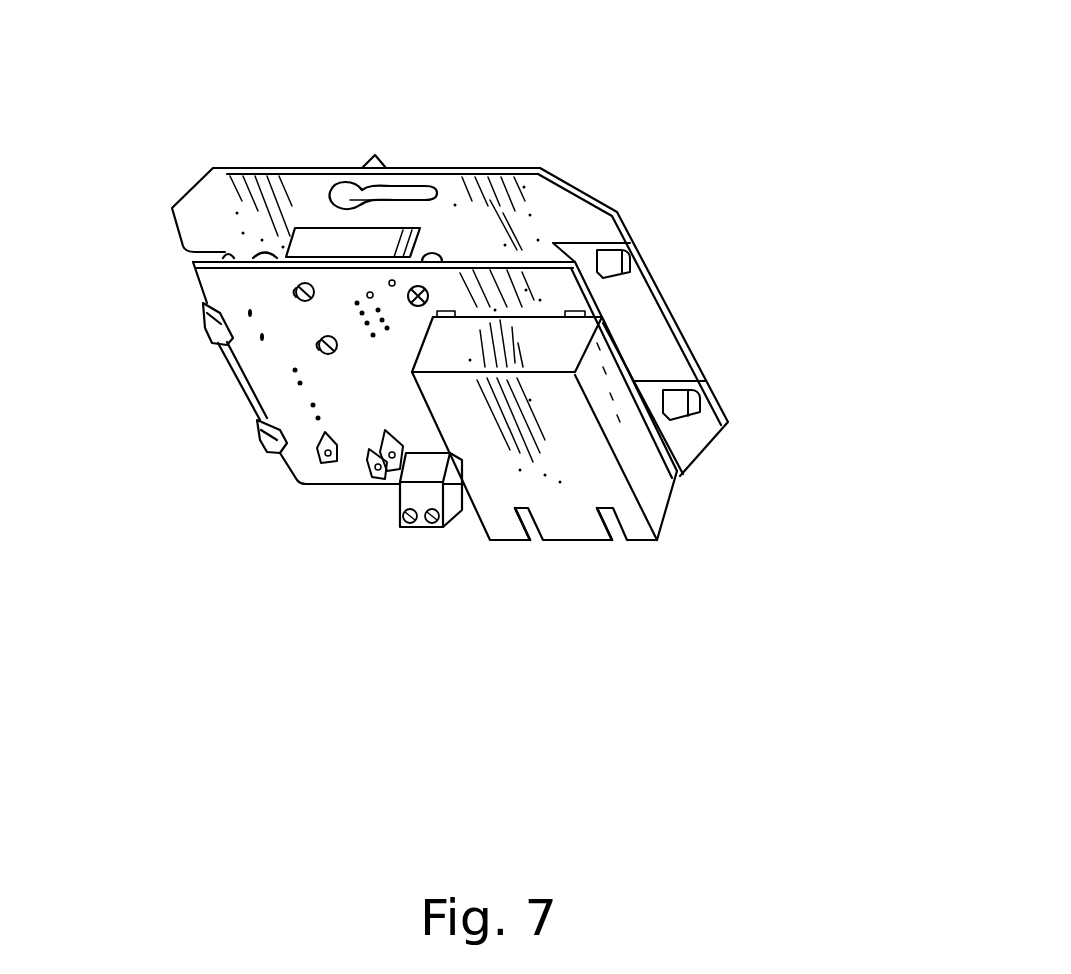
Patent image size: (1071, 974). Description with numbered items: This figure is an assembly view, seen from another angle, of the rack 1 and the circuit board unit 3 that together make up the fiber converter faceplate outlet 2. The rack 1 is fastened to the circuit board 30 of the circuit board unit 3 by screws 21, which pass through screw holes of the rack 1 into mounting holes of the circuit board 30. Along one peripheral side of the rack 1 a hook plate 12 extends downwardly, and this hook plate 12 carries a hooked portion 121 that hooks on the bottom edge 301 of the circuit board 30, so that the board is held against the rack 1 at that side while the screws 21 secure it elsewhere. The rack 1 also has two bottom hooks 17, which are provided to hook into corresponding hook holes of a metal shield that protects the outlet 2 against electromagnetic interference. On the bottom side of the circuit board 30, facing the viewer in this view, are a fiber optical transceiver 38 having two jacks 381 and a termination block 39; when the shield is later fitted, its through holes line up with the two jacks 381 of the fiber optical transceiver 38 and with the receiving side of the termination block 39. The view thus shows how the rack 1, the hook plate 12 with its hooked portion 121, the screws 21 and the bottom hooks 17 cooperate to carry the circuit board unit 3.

The rack 1 is at (634, 185).
The fiber converter faceplate outlet 2 is at (601, 150).
The circuit board unit 3 is at (686, 555).
The hook plate 12 is at (200, 313).
The bottom hooks 17 is at (620, 280).
The screws 21 is at (414, 304).
The circuit board 30 is at (355, 485).
The fiber optical transceiver 38 is at (372, 250).
The termination block 39 is at (457, 500).
The hooked portion 121 is at (215, 340).
The bottom edge 301 is at (222, 304).
The jacks 381 is at (533, 542).